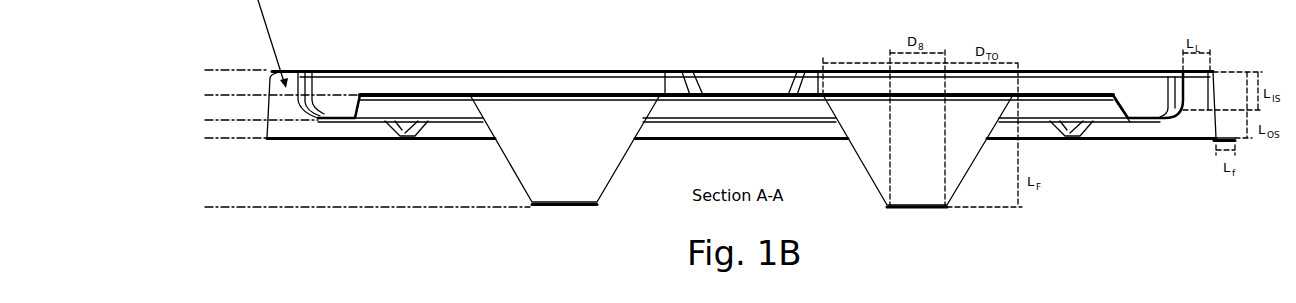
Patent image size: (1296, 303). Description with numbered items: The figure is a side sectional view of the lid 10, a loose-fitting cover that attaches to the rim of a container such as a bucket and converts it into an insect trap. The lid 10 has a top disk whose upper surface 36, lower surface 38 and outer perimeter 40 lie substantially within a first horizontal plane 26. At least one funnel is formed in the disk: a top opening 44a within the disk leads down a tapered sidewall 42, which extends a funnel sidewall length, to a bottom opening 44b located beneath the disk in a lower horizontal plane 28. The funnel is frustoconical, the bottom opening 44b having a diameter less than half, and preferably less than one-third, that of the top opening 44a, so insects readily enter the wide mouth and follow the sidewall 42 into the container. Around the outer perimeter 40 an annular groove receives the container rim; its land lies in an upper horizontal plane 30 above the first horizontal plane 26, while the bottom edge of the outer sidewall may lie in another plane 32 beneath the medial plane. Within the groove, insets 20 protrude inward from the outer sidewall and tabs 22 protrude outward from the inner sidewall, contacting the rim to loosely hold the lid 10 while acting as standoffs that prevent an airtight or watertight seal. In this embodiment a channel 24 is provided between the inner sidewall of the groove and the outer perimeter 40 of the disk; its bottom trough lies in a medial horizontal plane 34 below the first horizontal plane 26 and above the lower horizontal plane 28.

The lid 10 is at (749, 135).
The insets 20 is at (1077, 125).
The tabs 22 is at (307, 92).
The channel 24 is at (341, 98).
The first horizontal plane 26 is at (205, 95).
The lower horizontal plane 28 is at (208, 208).
The upper horizontal plane 30 is at (205, 68).
The other plane 32 is at (208, 139).
The medial horizontal plane 34 is at (208, 122).
The upper surface 36 is at (1058, 93).
The lower surface 38 is at (1113, 103).
The outer perimeter 40 is at (1122, 95).
The tapered sidewall 42 is at (610, 185).
The top opening 44a is at (547, 93).
The bottom opening 44b is at (572, 208).